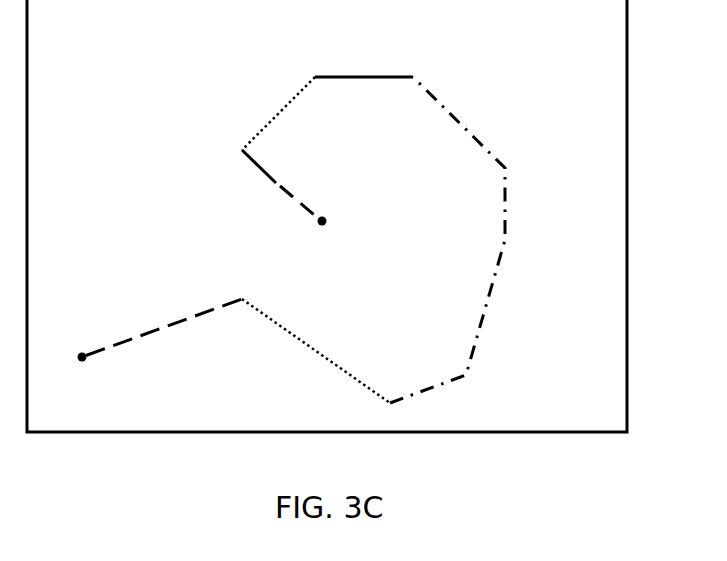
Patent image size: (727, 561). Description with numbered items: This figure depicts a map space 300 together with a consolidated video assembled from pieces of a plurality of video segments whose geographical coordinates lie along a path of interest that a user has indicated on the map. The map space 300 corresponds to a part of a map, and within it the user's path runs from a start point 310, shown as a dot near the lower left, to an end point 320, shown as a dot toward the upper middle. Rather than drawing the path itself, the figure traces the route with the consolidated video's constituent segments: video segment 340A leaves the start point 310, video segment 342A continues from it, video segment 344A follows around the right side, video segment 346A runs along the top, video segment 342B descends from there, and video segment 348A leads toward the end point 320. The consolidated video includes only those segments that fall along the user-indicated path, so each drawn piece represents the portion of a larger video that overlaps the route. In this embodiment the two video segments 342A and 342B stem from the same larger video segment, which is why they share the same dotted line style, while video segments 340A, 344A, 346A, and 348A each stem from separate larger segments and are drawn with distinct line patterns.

The map space 300 is at (628, 208).
The start point 310 is at (76, 357).
The end point 320 is at (330, 222).
The video segment 340A is at (172, 324).
The video segment 342A is at (317, 352).
The video segment 342B is at (282, 109).
The video segment 344A is at (507, 240).
The video segment 346A is at (368, 75).
The video segment 348A is at (277, 182).